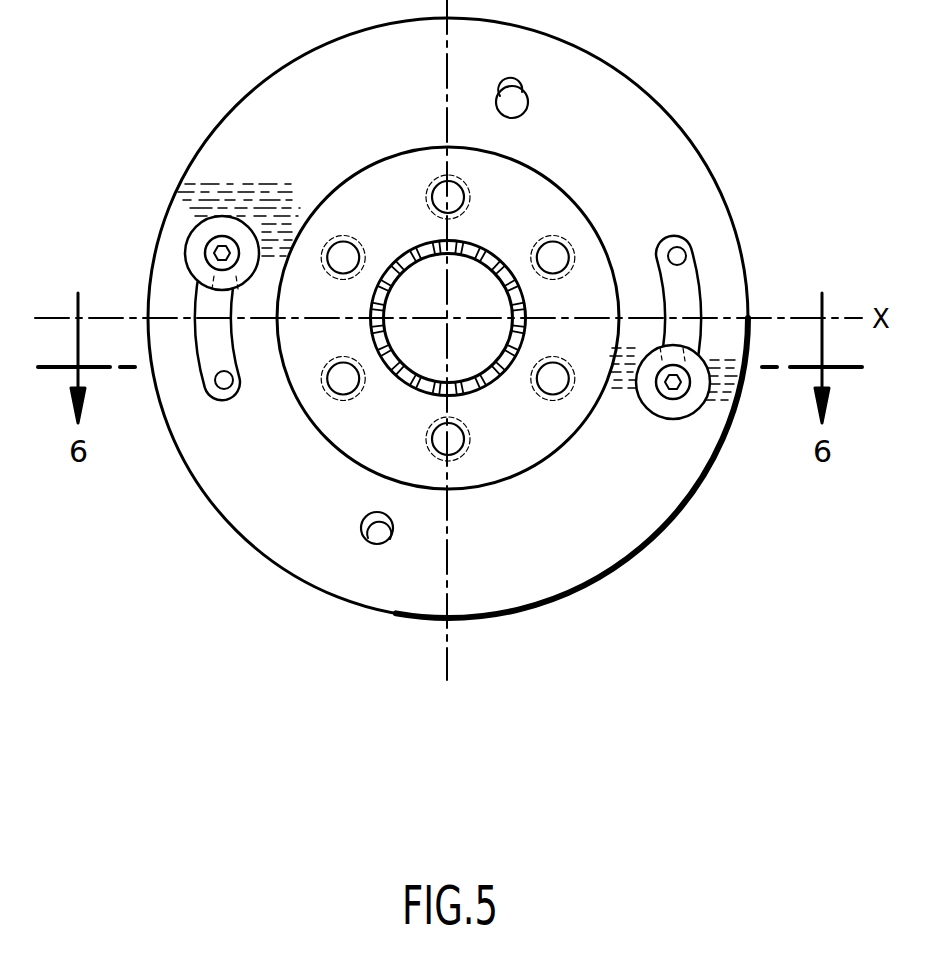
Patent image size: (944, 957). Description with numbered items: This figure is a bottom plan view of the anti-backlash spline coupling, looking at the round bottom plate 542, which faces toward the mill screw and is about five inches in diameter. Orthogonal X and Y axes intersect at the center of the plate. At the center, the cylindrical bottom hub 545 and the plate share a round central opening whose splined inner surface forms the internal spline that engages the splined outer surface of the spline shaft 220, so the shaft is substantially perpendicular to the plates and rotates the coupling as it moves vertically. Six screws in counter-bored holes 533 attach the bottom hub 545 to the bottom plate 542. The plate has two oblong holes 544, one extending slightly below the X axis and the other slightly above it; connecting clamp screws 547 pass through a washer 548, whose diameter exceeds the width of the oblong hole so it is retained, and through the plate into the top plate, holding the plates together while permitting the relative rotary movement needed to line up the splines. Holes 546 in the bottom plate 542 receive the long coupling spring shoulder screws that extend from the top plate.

The spline shaft 220 is at (493, 378).
The counter-bored holes 533 is at (562, 252).
The bottom plate 542 is at (688, 135).
The oblong holes 544 is at (713, 226).
The bottom hub 545 is at (542, 178).
The holes 546 is at (503, 90).
The connecting clamp screws 547 is at (220, 252).
The washer 548 is at (205, 222).